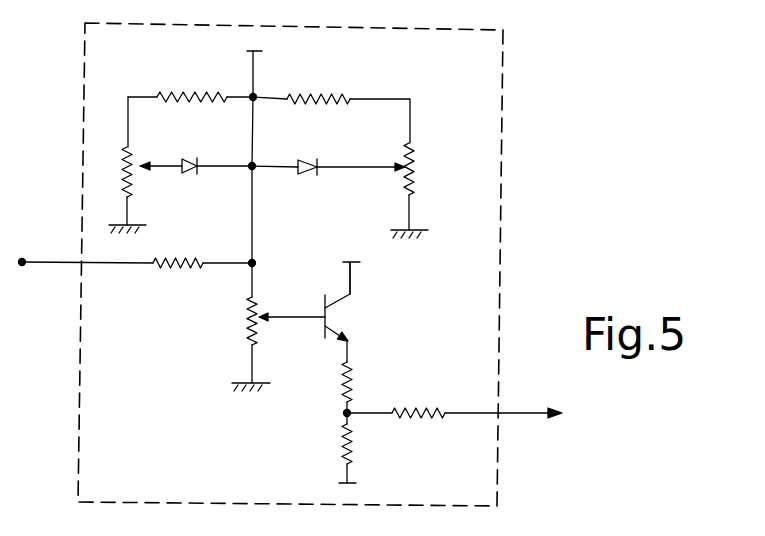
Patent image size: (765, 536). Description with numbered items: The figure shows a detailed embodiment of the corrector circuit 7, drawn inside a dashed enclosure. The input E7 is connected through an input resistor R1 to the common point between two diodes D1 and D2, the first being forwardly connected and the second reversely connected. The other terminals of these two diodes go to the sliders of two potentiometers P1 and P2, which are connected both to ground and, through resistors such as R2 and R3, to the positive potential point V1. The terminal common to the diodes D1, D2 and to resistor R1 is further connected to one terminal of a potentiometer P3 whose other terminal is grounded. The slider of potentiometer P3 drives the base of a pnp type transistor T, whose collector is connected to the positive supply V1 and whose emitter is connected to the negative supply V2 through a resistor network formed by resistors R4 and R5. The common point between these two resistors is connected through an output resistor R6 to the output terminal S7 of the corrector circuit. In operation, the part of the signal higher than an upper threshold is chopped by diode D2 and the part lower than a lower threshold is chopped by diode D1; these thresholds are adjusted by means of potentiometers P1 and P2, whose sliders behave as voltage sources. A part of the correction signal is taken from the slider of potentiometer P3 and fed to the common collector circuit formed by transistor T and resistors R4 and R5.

The corrector circuit 7 is at (500, 222).
The input resistor R1 is at (178, 270).
The resistor R2 is at (189, 92).
The resistor R3 is at (328, 95).
The resistor R4 is at (355, 381).
The resistor R5 is at (343, 444).
The output resistor R6 is at (420, 416).
The potentiometer P1 is at (133, 150).
The potentiometer P2 is at (415, 152).
The potentiometer P3 is at (243, 332).
The diode D1 is at (198, 171).
The diode D2 is at (300, 177).
The pnp type transistor T is at (340, 311).
The input E7 is at (24, 266).
The output terminal S7 is at (541, 433).
The positive potential point V1 is at (303, 166).
The negative supply terminal V2 is at (368, 489).